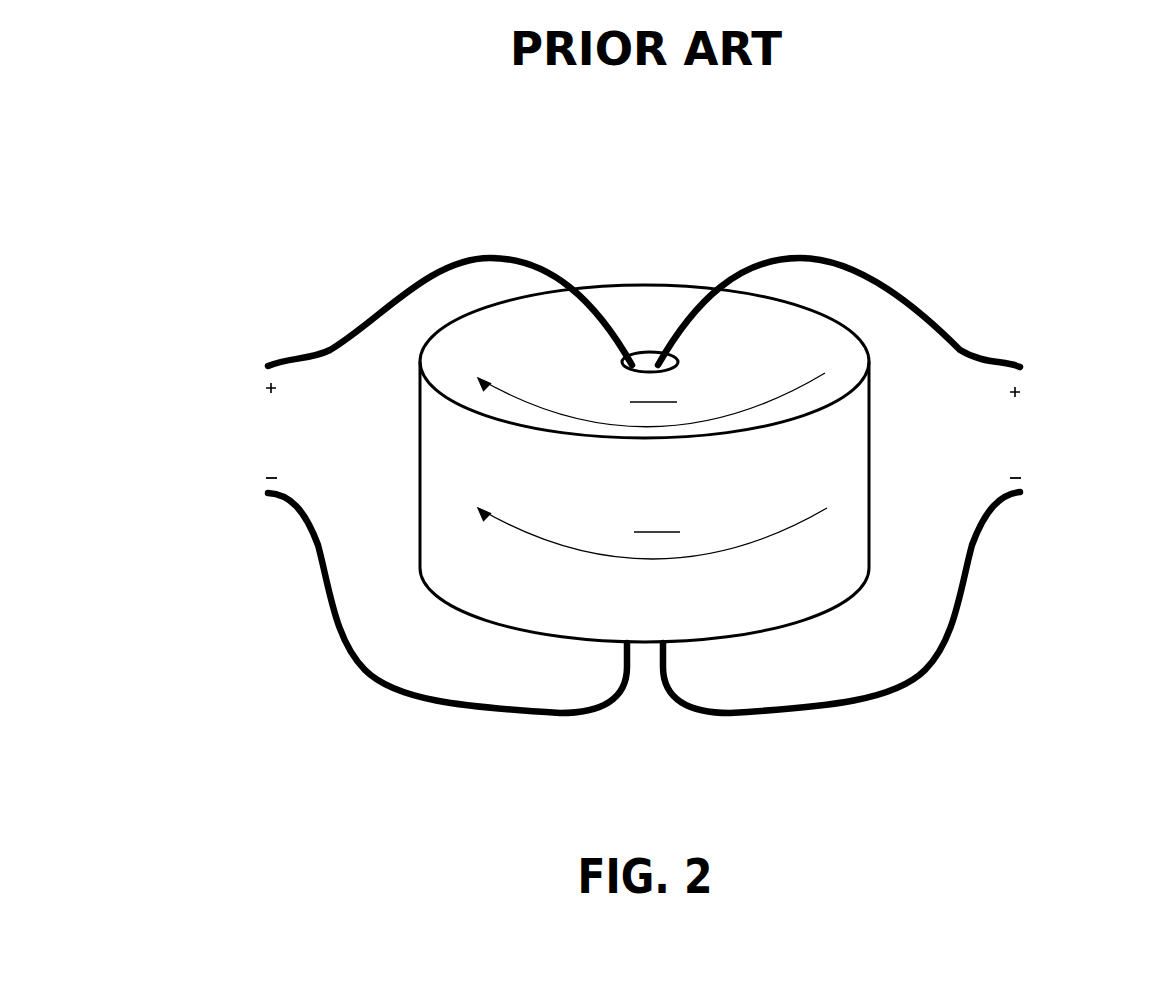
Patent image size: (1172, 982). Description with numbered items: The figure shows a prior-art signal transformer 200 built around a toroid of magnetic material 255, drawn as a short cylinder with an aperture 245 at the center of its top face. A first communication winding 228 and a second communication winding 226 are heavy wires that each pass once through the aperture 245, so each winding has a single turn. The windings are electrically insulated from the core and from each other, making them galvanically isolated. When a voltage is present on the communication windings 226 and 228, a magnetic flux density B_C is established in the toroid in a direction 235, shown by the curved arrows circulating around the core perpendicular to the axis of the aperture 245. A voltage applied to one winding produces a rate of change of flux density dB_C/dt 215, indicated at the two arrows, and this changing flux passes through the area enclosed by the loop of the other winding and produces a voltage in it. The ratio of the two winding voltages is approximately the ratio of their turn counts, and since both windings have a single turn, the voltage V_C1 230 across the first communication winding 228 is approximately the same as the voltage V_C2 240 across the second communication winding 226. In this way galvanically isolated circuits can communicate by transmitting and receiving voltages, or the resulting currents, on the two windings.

The signal transformer 200 is at (331, 165).
The rate of change of flux density dB_C/dt 215 is at (629, 391).
The second communication winding 226 is at (992, 348).
The first communication winding 228 is at (318, 343).
The voltage V_C1 230 is at (249, 423).
The flux density direction 235 is at (727, 419).
The voltage V_C2 240 is at (1057, 433).
The aperture 245 is at (654, 360).
The toroid of magnetic material 255 is at (880, 447).